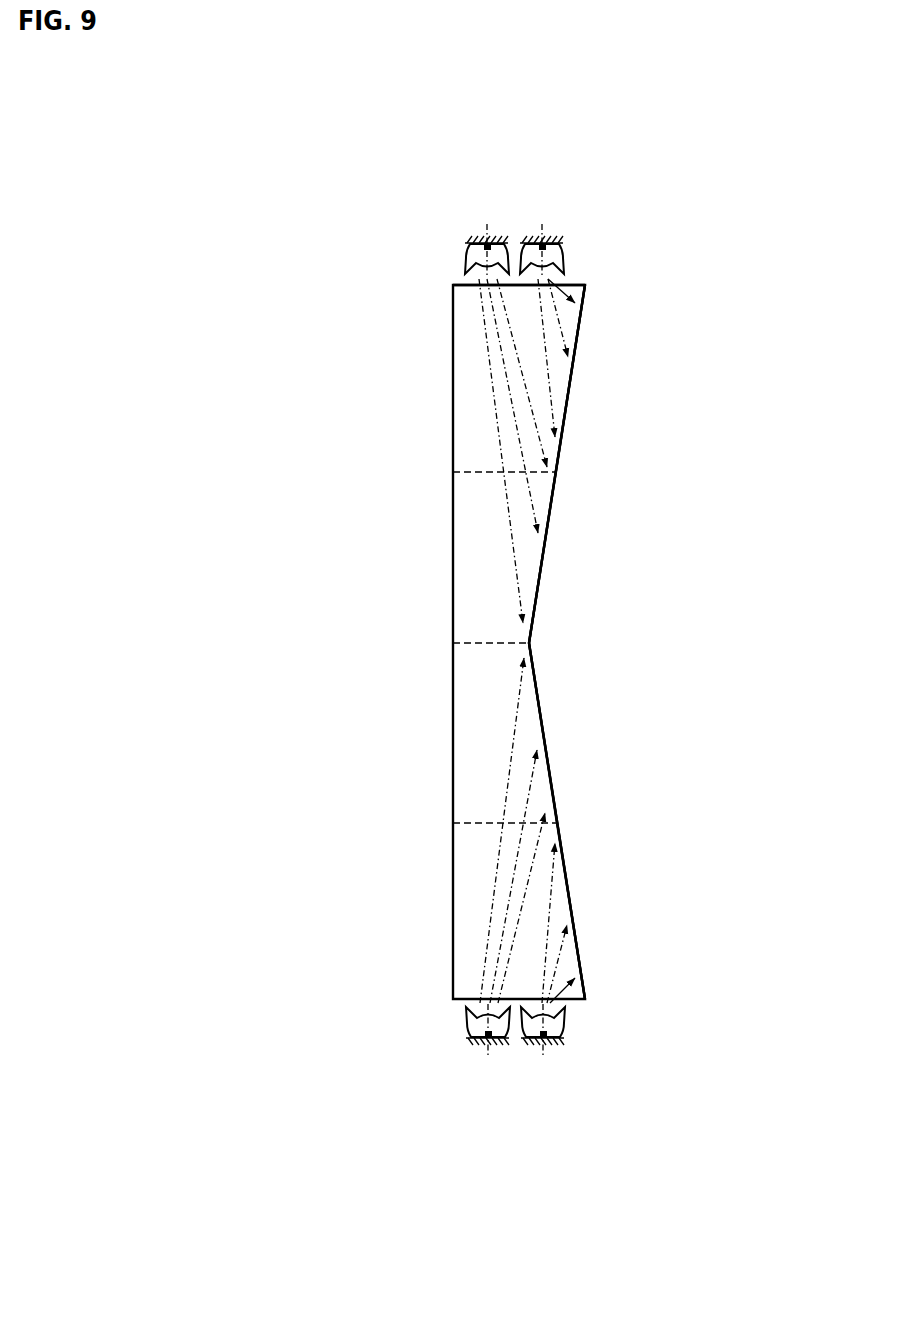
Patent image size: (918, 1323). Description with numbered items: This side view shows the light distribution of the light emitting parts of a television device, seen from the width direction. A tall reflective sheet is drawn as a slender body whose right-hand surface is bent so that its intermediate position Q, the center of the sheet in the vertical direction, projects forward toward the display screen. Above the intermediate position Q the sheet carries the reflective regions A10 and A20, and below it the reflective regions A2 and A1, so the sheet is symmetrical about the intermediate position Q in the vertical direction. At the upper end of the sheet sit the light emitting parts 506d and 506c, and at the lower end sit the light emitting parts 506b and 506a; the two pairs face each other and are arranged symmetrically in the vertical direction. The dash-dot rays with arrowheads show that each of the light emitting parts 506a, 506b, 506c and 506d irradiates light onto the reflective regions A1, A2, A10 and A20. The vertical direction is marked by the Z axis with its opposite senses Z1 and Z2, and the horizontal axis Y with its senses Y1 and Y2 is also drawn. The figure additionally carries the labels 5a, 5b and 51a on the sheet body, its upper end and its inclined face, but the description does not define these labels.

The light guide 5a is at (594, 1043).
The end surface of light guide 5b is at (584, 284).
The inclined reflecting side surface (505) 51a is at (575, 342).
The reflective region A10 is at (568, 398).
The reflective region A20 is at (545, 557).
The intermediate position Q is at (529, 643).
The reflective region A2 is at (543, 723).
The reflective region A1 is at (570, 888).
The light emitting part 506a is at (561, 1050).
The light emitting part 506b is at (467, 1050).
The light emitting part 506c is at (560, 222).
The light emitting part 506d is at (463, 222).
The Y1 direction Y1 is at (452, 1207).
The Y2 direction Y2 is at (523, 1207).
The Y direction Y is at (523, 1247).
The Z1 direction Z1 is at (580, 1165).
The Z2 direction Z2 is at (580, 1238).
The vertical direction Z is at (620, 1165).